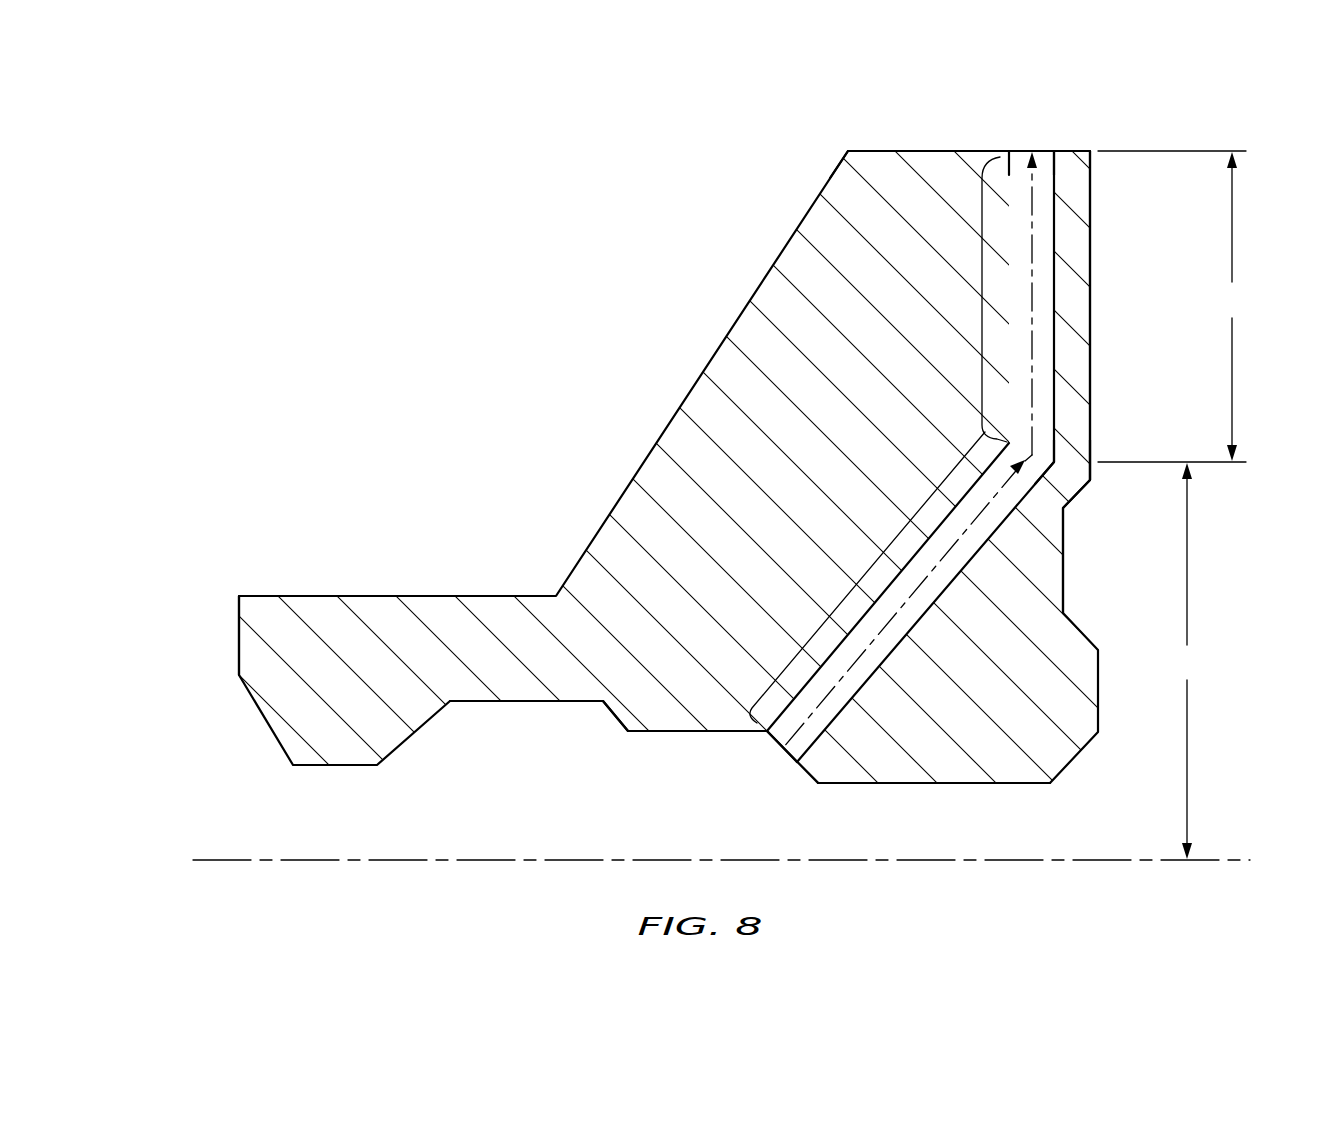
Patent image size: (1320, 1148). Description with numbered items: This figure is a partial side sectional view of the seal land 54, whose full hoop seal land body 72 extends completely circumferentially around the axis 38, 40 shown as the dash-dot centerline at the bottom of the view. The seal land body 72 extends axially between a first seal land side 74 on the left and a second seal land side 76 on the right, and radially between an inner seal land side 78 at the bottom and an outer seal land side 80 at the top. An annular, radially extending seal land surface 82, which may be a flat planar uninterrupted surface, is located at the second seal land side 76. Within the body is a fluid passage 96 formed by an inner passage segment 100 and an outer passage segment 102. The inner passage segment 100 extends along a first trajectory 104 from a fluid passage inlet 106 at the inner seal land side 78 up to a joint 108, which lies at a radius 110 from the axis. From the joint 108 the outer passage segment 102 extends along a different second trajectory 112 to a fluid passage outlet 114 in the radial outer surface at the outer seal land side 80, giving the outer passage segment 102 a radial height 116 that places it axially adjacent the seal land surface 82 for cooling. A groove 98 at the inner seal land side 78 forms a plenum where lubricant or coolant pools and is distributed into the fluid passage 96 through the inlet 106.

The seal land 54 is at (386, 233).
The seal land body 72 is at (870, 146).
The outer seal land side 80 is at (910, 150).
The fluid passage outlet 114 is at (1040, 151).
The seal land surface 82 is at (1093, 292).
The second trajectory 112 is at (1042, 346).
The second seal land side 76 is at (1093, 426).
The radial height 116 is at (1176, 306).
The radius 110 is at (1187, 661).
The outer passage segment 102 is at (983, 295).
The inner passage segment 100 is at (863, 578).
The fluid passage 96 is at (962, 571).
The first trajectory 104 is at (877, 670).
The joint 108 is at (1055, 463).
The fluid passage inlet 106 is at (770, 752).
The groove 98 is at (601, 768).
The inner seal land side 78 is at (862, 786).
The first seal land side 74 is at (239, 630).
The axis 38 is at (704, 810).
The axis 40 is at (210, 858).